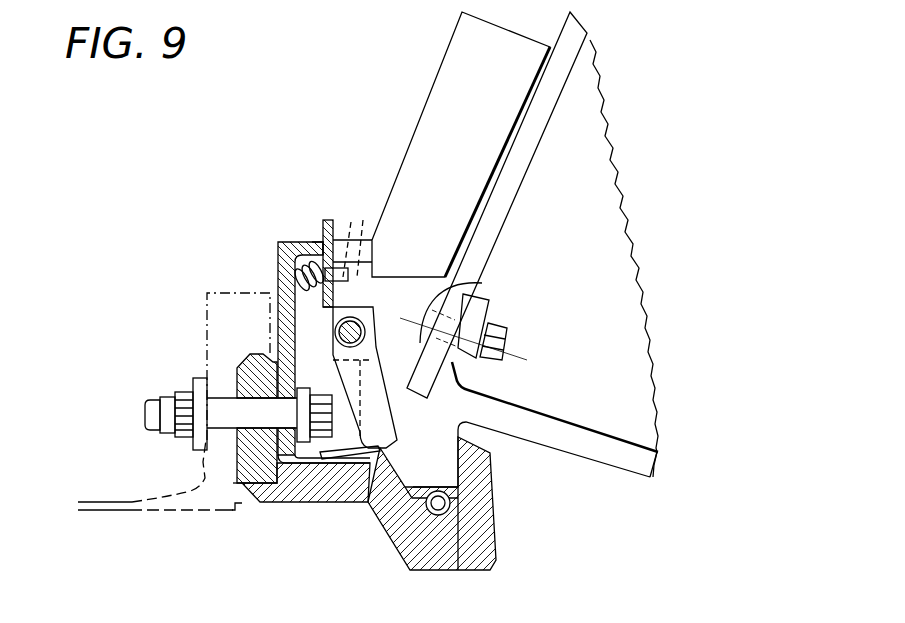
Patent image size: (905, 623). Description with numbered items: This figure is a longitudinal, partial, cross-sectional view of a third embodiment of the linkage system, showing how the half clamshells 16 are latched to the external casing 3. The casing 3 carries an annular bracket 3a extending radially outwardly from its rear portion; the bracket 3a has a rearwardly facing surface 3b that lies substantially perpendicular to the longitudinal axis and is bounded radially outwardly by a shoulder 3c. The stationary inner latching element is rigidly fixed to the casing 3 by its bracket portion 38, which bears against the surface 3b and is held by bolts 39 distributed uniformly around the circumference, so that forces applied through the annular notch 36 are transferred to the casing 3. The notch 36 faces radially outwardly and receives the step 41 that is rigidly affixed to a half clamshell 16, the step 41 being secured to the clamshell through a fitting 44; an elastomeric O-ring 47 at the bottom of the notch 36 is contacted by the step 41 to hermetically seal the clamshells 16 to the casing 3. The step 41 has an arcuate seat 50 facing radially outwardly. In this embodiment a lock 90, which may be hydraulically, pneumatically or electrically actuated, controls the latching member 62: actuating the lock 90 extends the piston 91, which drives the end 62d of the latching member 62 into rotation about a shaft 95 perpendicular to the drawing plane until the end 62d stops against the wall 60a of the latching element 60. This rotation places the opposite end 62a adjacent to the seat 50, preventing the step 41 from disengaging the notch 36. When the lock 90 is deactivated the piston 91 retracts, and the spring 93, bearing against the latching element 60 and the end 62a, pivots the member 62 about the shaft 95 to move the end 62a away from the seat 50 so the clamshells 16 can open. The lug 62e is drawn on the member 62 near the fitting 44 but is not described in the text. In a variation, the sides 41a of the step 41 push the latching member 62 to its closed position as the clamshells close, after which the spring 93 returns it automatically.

The external casing 3 is at (127, 502).
The annular bracket 3a is at (218, 314).
The rearwardly facing surface 3b is at (240, 503).
The shoulder 3c is at (240, 363).
The half clamshells 16 is at (642, 134).
The annular notch 36 is at (393, 538).
The bracket portion 38 is at (294, 504).
The bolts 39 is at (150, 416).
The step 41 is at (452, 497).
The sides of the step 41a is at (405, 478).
The fitting 44 is at (573, 46).
The elastomeric O-ring 47 is at (452, 512).
The seat 50 is at (458, 456).
The latching element 60 is at (277, 294).
The wall 60a is at (318, 241).
The latching member 62 is at (467, 386).
The end of the latching member 62a is at (380, 450).
The end of the latching member 62d is at (328, 218).
The lever lug 62e is at (478, 277).
The lock 90 is at (452, 68).
The piston 91 is at (357, 238).
The spring 93 is at (280, 243).
The shaft 95 is at (388, 338).